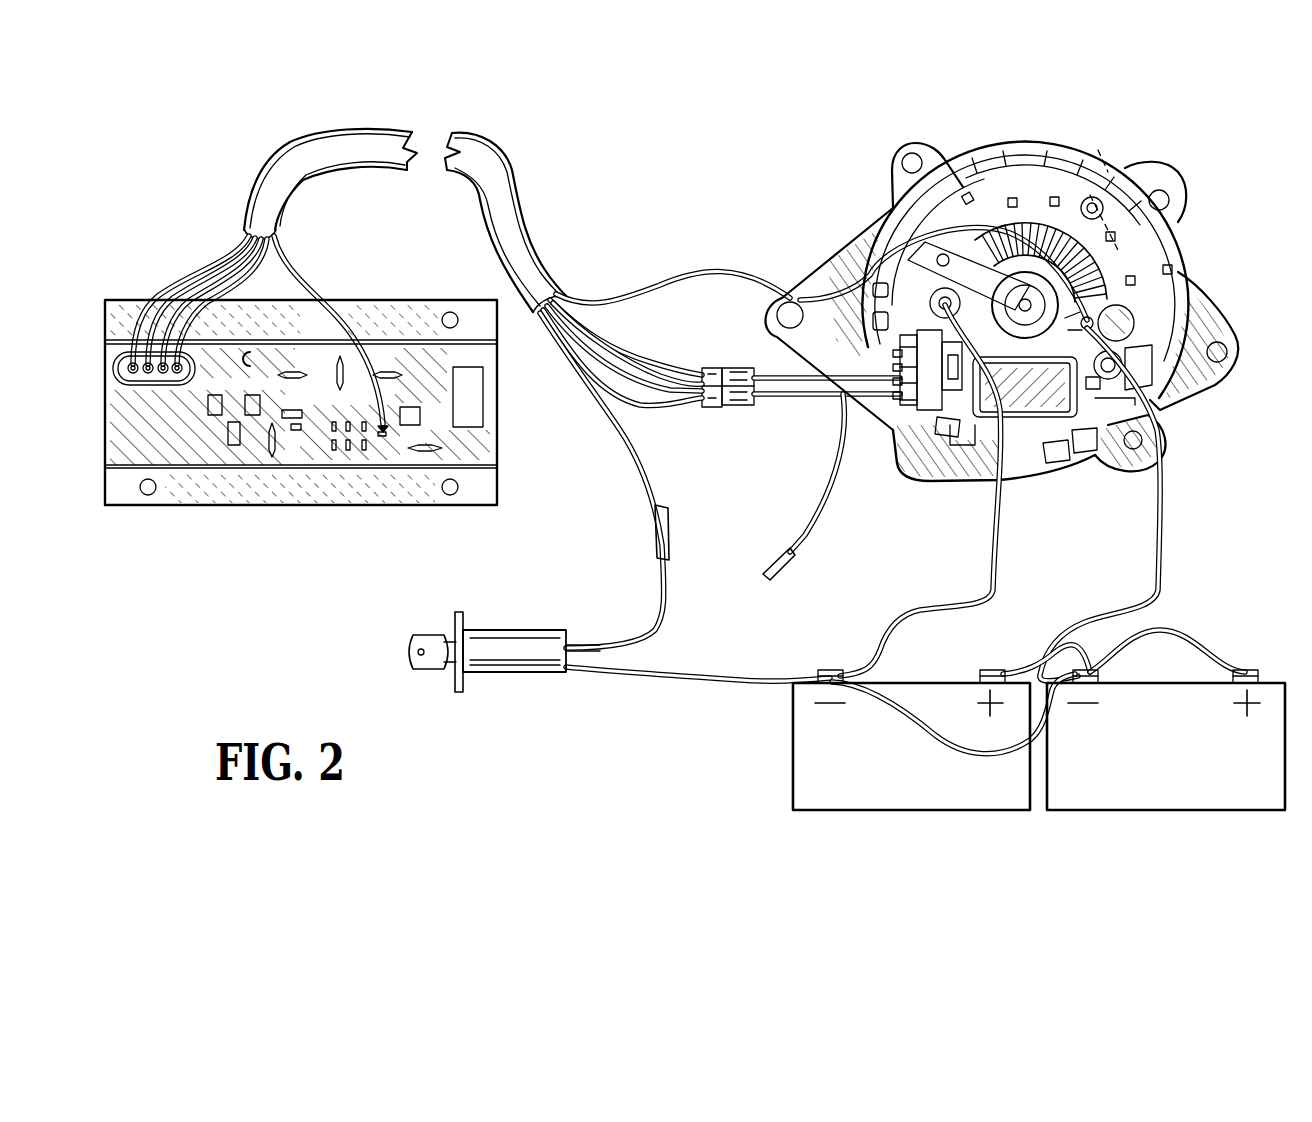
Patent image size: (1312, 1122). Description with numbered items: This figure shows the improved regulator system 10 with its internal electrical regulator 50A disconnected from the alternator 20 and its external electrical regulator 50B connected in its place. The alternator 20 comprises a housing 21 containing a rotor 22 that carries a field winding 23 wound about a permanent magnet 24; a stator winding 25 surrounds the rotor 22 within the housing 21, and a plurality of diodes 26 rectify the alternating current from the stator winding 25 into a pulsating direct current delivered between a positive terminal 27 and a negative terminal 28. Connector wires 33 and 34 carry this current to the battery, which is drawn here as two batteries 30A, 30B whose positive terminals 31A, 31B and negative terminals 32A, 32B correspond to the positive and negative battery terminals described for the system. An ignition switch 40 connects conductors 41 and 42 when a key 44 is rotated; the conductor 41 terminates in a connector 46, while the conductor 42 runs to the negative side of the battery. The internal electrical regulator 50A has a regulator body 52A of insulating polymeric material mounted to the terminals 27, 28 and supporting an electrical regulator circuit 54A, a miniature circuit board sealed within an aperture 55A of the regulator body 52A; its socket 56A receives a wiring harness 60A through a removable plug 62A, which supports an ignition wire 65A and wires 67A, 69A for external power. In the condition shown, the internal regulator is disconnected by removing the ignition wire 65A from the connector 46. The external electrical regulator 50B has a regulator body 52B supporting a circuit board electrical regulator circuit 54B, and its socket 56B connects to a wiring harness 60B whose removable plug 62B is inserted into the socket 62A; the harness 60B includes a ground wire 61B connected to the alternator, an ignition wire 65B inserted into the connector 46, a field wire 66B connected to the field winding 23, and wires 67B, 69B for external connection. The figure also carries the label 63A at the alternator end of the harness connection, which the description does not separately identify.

The improved regulator system 10 is at (230, 128).
The electrical alternator 20 is at (1140, 147).
The housing 21 is at (890, 250).
The rotor 22 is at (1052, 297).
The field winding 23 is at (1092, 315).
The permanent magnet 24 is at (1060, 232).
The stator winding 25 is at (1100, 240).
The diodes 26 is at (1012, 198).
The positive terminal 27 is at (1163, 380).
The negative terminal 28 is at (900, 262).
The first battery 30A is at (903, 800).
The second battery 30B is at (1148, 800).
The positive terminal of first battery 31A is at (990, 668).
The positive terminal of second battery 31B is at (1245, 668).
The negative terminal of first battery 32A is at (828, 668).
The negative terminal of second battery 32B is at (1108, 646).
The connector wire 33 is at (1156, 568).
The connector wire 34 is at (990, 568).
The ignition switch 40 is at (495, 708).
The conductor 41 is at (590, 643).
The conductor 42 is at (592, 668).
The key 44 is at (420, 667).
The connector 46 is at (658, 553).
The internal electrical regulator 50A is at (1182, 448).
The external electrical regulator 50B is at (180, 206).
The regulator body 52A is at (1100, 420).
The regulator body 52B is at (393, 337).
The electrical regulator circuit 54A is at (1048, 398).
The electrical regulator circuit 54B is at (295, 430).
The aperture 55A is at (1017, 420).
The socket 56A is at (975, 430).
The socket 56B is at (197, 363).
The wiring harness 60A is at (740, 263).
The wiring harness 60B is at (615, 228).
The ground wire 61B is at (675, 278).
The removable plug 62A is at (747, 368).
The removable plug 62B is at (700, 373).
The alternator harness connector 63A is at (910, 405).
The ignition wire 65A is at (803, 550).
The ignition wire 65B is at (643, 482).
The field wire 66B is at (606, 385).
The wire 67A is at (810, 398).
The wire 67B is at (627, 405).
The wire 69A is at (777, 396).
The wire 69B is at (660, 388).